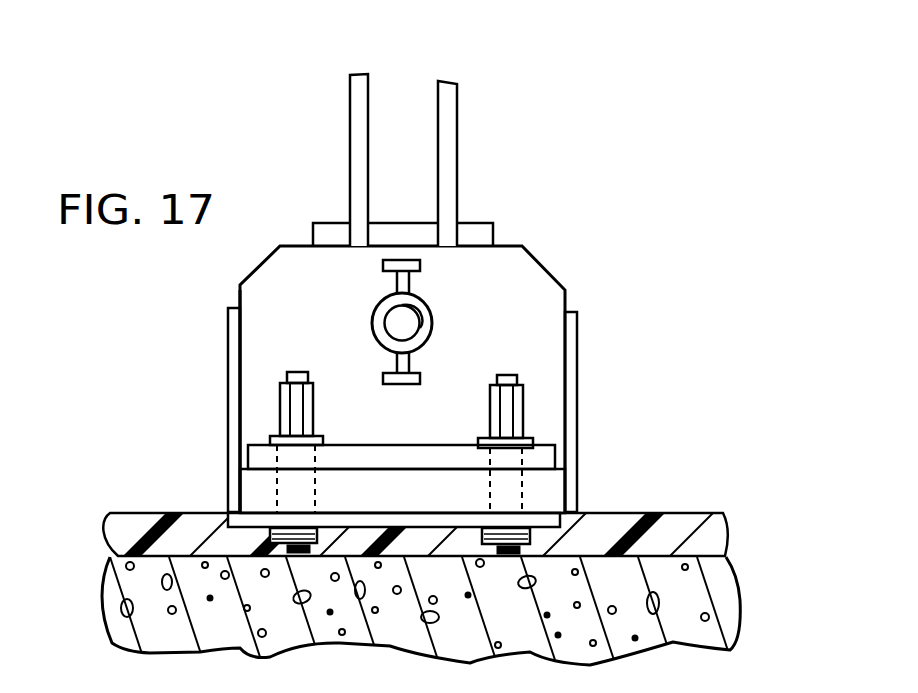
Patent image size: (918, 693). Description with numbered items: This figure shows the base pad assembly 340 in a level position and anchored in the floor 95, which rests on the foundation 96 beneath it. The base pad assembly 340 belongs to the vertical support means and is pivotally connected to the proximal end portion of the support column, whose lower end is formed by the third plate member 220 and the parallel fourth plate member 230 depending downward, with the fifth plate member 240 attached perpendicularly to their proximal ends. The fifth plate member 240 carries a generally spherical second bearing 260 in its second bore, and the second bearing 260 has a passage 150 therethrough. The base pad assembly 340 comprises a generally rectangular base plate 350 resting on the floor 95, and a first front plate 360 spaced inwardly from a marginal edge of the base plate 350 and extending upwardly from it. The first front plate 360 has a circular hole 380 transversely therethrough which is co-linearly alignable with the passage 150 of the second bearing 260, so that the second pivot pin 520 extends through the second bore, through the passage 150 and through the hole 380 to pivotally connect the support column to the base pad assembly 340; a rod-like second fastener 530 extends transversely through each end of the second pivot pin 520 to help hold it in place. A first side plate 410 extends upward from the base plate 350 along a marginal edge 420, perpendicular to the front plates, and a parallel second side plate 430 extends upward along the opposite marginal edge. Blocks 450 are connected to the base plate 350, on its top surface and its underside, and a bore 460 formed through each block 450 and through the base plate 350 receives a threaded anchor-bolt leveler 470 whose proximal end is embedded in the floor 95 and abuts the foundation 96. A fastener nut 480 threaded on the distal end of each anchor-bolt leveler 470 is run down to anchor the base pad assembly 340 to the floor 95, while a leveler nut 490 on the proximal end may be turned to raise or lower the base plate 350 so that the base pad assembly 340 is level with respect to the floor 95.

The floor 95 is at (712, 538).
The foundation 96 is at (738, 616).
The passage 150 is at (415, 313).
The third plate member 220 is at (354, 108).
The fourth plate member 230 is at (451, 108).
The fifth plate member 240 is at (327, 230).
The second bearing 260 is at (375, 333).
The base pad assembly 340 is at (594, 235).
The base plate 350 is at (552, 495).
The first front plate 360 is at (509, 246).
The circular hole 380 is at (378, 308).
The first side plate 410 is at (228, 343).
The marginal edge 420 is at (240, 483).
The second side plate 430 is at (578, 333).
The block 450 is at (543, 460).
The bore 460 is at (493, 500).
The anchor-bolt leveler 470 is at (500, 375).
The fastener nut 480 is at (302, 408).
The leveler nut 490 is at (308, 525).
The second pivot pin 520 is at (410, 334).
The second fastener 530 is at (420, 268).